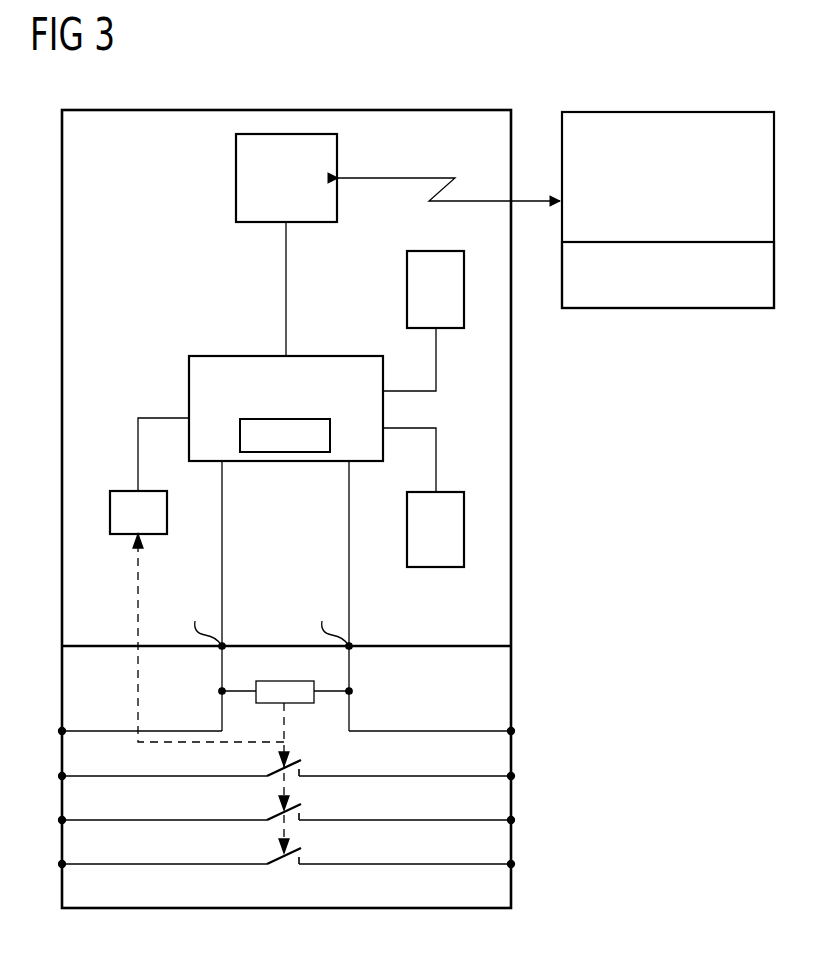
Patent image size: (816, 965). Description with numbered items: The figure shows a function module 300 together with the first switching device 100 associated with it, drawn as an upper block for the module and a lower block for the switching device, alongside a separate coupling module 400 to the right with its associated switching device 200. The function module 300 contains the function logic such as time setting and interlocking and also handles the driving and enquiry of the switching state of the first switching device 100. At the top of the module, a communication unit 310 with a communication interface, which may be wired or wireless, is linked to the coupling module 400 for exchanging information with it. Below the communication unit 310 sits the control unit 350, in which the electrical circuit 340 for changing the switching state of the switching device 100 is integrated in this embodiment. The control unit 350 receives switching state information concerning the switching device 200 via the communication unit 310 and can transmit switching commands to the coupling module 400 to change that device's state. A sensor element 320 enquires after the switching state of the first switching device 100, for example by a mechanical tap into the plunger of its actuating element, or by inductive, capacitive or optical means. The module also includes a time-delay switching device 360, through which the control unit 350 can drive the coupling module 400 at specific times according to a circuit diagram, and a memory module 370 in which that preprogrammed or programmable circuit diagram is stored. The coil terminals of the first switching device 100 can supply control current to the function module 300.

The first switching device 100 is at (511, 675).
The switching device 200 is at (670, 300).
The function module 300 is at (512, 425).
The communication unit 310 is at (235, 178).
The sensor element 320 is at (123, 535).
The electrical circuit 340 is at (283, 418).
The control unit 350 is at (197, 383).
The time-delay switching device 360 is at (406, 288).
The memory module 370 is at (436, 568).
The coupling module 400 is at (670, 118).